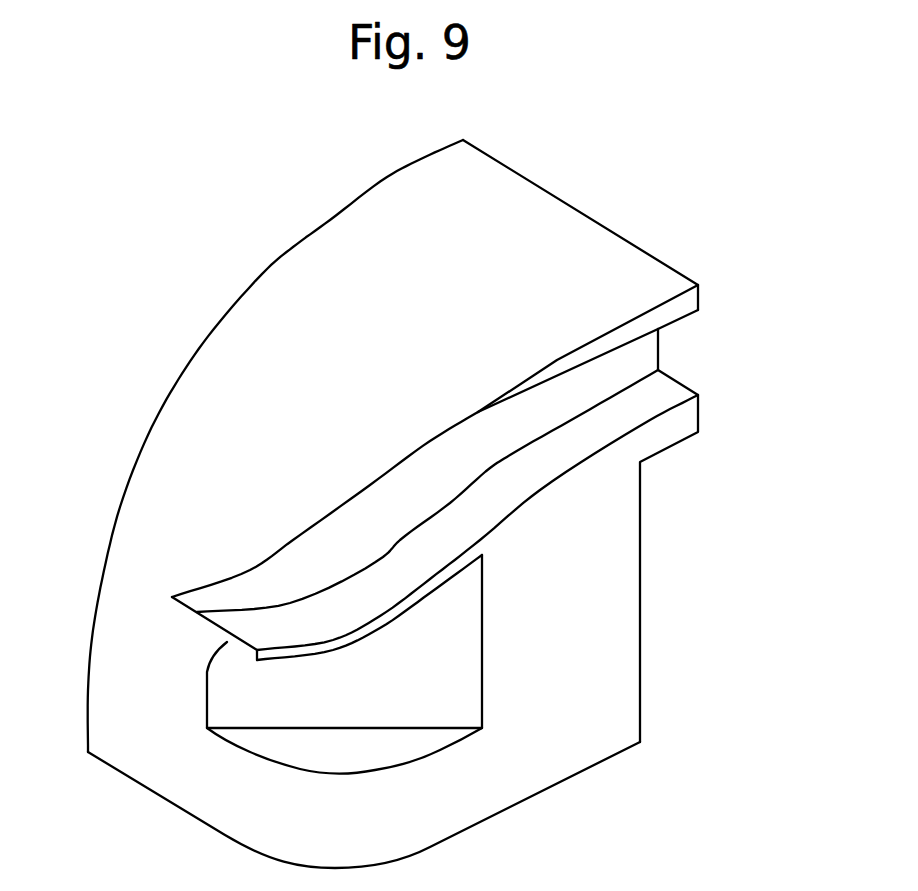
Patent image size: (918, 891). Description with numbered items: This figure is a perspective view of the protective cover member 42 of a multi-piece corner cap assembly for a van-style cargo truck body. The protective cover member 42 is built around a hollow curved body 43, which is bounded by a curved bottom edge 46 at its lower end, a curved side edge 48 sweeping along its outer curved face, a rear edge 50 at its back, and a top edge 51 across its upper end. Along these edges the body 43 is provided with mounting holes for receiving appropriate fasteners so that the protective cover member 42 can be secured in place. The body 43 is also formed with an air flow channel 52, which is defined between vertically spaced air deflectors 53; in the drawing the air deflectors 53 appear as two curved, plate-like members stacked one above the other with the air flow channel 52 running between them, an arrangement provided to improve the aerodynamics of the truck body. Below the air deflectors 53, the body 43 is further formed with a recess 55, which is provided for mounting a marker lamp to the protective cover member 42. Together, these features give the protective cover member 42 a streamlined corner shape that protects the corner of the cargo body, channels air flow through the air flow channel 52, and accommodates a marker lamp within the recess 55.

The protective cover member 42 is at (288, 203).
The hollow curved body 43 is at (182, 442).
The curved bottom edge 46 is at (153, 794).
The curved side edge 48 is at (214, 331).
The rear edge 50 is at (640, 600).
The top edge 51 is at (594, 216).
The air flow channel 52 is at (646, 356).
The air deflectors 53 is at (690, 300).
The recess 55 is at (253, 699).